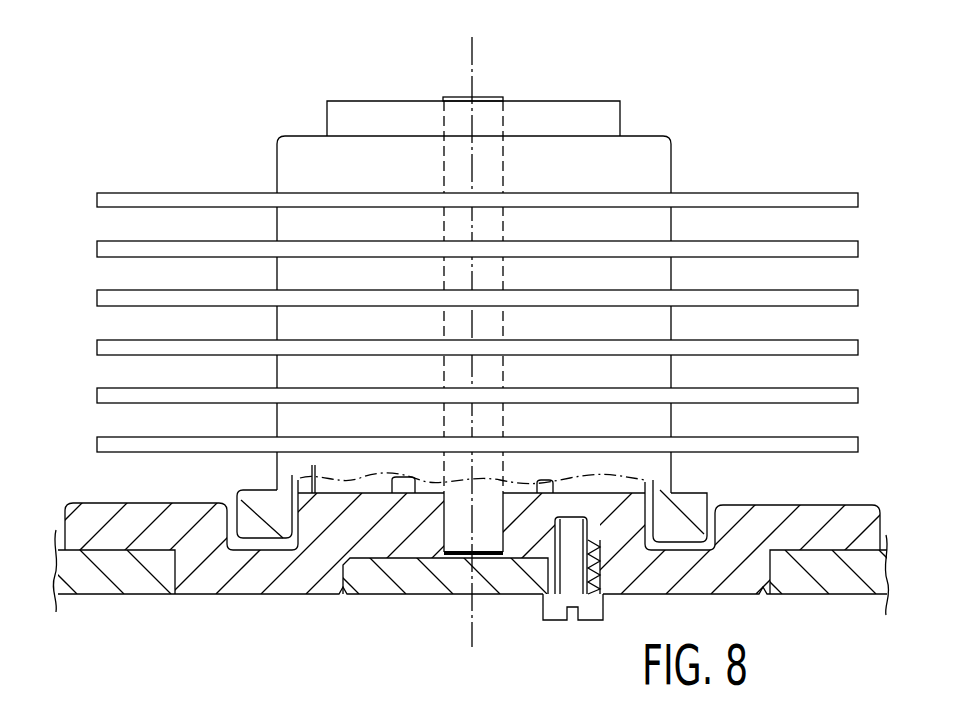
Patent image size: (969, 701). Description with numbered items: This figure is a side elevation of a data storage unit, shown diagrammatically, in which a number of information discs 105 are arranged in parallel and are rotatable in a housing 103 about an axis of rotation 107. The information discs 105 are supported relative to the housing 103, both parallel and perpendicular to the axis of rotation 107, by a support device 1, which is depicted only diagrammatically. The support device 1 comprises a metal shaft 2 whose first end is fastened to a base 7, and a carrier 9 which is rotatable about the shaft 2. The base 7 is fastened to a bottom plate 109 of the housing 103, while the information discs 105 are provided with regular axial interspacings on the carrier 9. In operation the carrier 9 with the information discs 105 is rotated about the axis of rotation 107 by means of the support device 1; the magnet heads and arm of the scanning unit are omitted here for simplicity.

The support device 1 is at (450, 304).
The metal shaft 2 is at (488, 118).
The base 7 is at (333, 538).
The carrier 9 is at (307, 163).
The housing 103 is at (115, 573).
The information discs 105 is at (112, 298).
The axis of rotation 107 is at (472, 54).
The bottom plate 109 is at (845, 576).